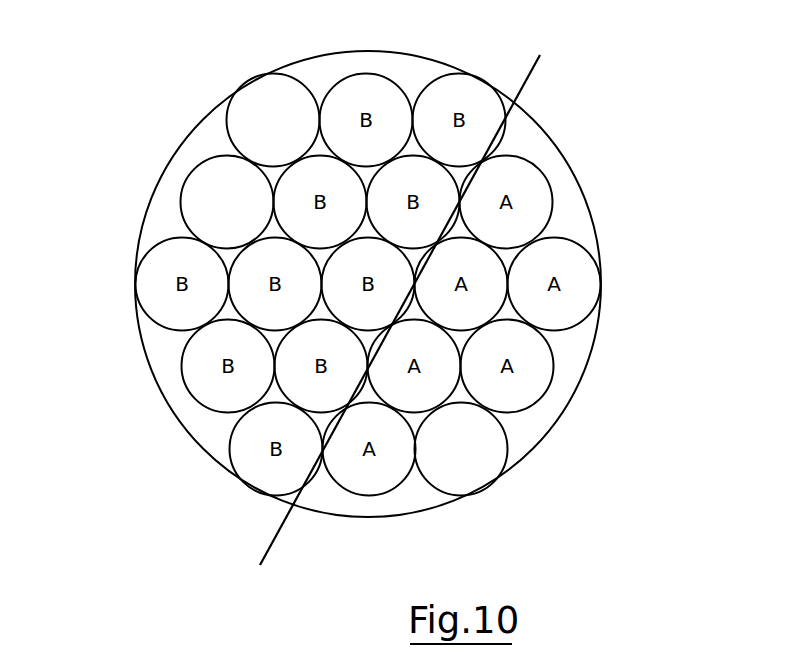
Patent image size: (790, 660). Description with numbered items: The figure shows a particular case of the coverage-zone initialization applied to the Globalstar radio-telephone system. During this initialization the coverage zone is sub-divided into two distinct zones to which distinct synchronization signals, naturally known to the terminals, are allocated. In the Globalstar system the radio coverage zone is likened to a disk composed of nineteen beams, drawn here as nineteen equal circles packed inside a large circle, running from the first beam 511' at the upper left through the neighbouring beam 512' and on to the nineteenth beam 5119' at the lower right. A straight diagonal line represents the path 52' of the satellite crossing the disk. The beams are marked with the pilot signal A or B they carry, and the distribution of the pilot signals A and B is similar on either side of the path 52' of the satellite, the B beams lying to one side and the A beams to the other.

The beam 511' is at (261, 89).
The beam 512' is at (178, 175).
The path of the satellite 52' is at (455, 310).
The beam 5119' is at (532, 463).